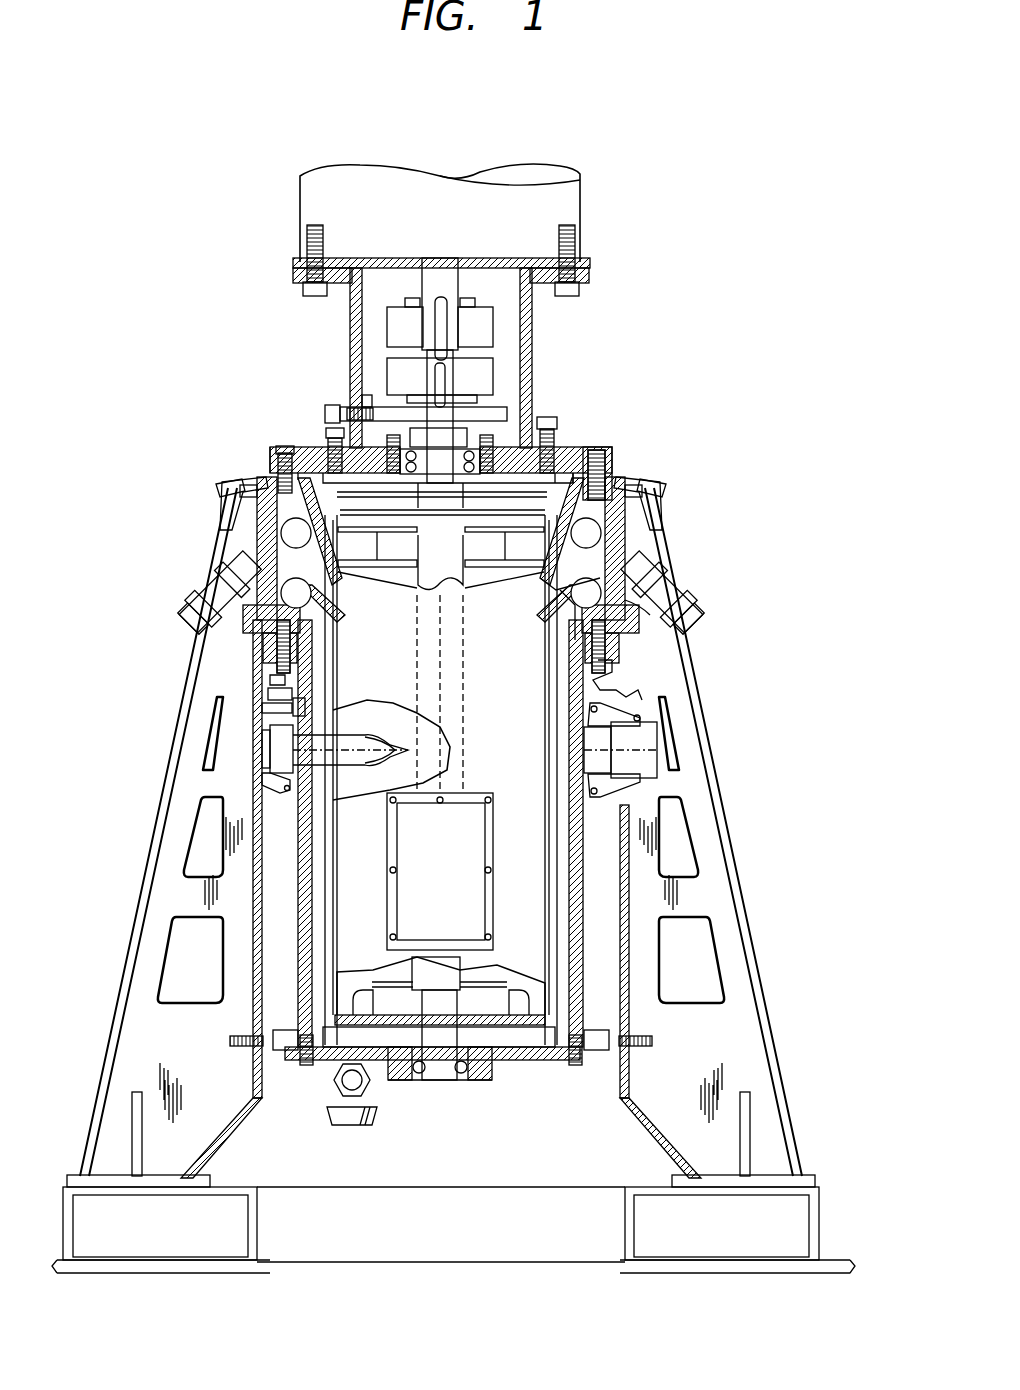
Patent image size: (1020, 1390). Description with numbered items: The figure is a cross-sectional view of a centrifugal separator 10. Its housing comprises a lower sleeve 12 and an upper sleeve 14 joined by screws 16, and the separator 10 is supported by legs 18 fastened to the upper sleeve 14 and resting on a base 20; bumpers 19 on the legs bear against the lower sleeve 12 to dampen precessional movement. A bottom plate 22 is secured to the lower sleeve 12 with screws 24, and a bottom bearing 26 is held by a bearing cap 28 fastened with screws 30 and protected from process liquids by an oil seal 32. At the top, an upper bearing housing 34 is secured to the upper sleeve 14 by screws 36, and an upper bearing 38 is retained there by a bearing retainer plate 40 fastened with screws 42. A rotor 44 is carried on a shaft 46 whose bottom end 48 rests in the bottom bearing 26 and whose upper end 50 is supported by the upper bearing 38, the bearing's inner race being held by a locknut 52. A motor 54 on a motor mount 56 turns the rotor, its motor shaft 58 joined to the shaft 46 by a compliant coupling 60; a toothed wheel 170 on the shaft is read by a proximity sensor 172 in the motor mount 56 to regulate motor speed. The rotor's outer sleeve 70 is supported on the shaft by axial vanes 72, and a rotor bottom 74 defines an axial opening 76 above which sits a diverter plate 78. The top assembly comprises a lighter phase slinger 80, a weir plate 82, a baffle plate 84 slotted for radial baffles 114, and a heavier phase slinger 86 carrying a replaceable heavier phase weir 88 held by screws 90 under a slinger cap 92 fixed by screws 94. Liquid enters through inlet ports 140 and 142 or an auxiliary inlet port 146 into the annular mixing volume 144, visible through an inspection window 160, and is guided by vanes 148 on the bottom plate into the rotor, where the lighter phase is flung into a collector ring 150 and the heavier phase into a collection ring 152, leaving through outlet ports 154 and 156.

The separator 10 is at (770, 590).
The lower sleeve 12 is at (590, 892).
The upper sleeve 14 is at (660, 612).
The screws 16 is at (268, 690).
The legs 18 is at (740, 1035).
The bumpers 19 is at (600, 1045).
The base 20 is at (830, 1222).
The bottom plate 22 is at (565, 1060).
The screws 24 is at (285, 1075).
The bottom bearing 26 is at (445, 1080).
The bearing cap 28 is at (492, 1078).
The screws 30 is at (478, 1080).
The oil seal 32 is at (495, 1010).
The upper bearing housing 34 is at (612, 460).
The screws 36 is at (596, 447).
The upper bearing 38 is at (464, 462).
The bearing retainer plate 40 is at (578, 450).
The screws 42 is at (466, 436).
The rotor 44 is at (600, 575).
The shaft 46 is at (440, 990).
The bottom end 48 is at (440, 1085).
The upper end 50 is at (447, 410).
The locknut 52 is at (335, 430).
The motor 54 is at (574, 210).
The motor mount 56 is at (536, 310).
The motor shaft 58 is at (450, 270).
The compliant coupling 60 is at (482, 322).
The outer sleeve 70 is at (545, 720).
The axial vanes 72 is at (497, 975).
The rotor bottom 74 is at (360, 1002).
The axial opening 76 is at (397, 985).
The diverter plate 78 is at (345, 975).
The lighter phase slinger 80 is at (425, 600).
The weir plate 82 is at (380, 565).
The baffle plate 84 is at (337, 555).
The heavier phase slinger 86 is at (272, 455).
The heavier phase weir 88 is at (383, 518).
The screws 90 is at (300, 518).
The slinger cap 92 is at (298, 455).
The screws 94 is at (560, 478).
The radial baffles 114 is at (377, 580).
The inlet port 140 is at (280, 752).
The inlet port 142 is at (655, 745).
The annular mixing volume 144 is at (553, 812).
The auxiliary inlet port 146 is at (270, 707).
The vanes 148 is at (335, 1100).
The collector ring 150 is at (578, 600).
The collection ring 152 is at (660, 480).
The outlet port 154 is at (230, 575).
The outlet port 156 is at (690, 630).
The inspection window 160 is at (470, 862).
The toothed wheel 170 is at (352, 372).
The proximity sensor 172 is at (323, 412).